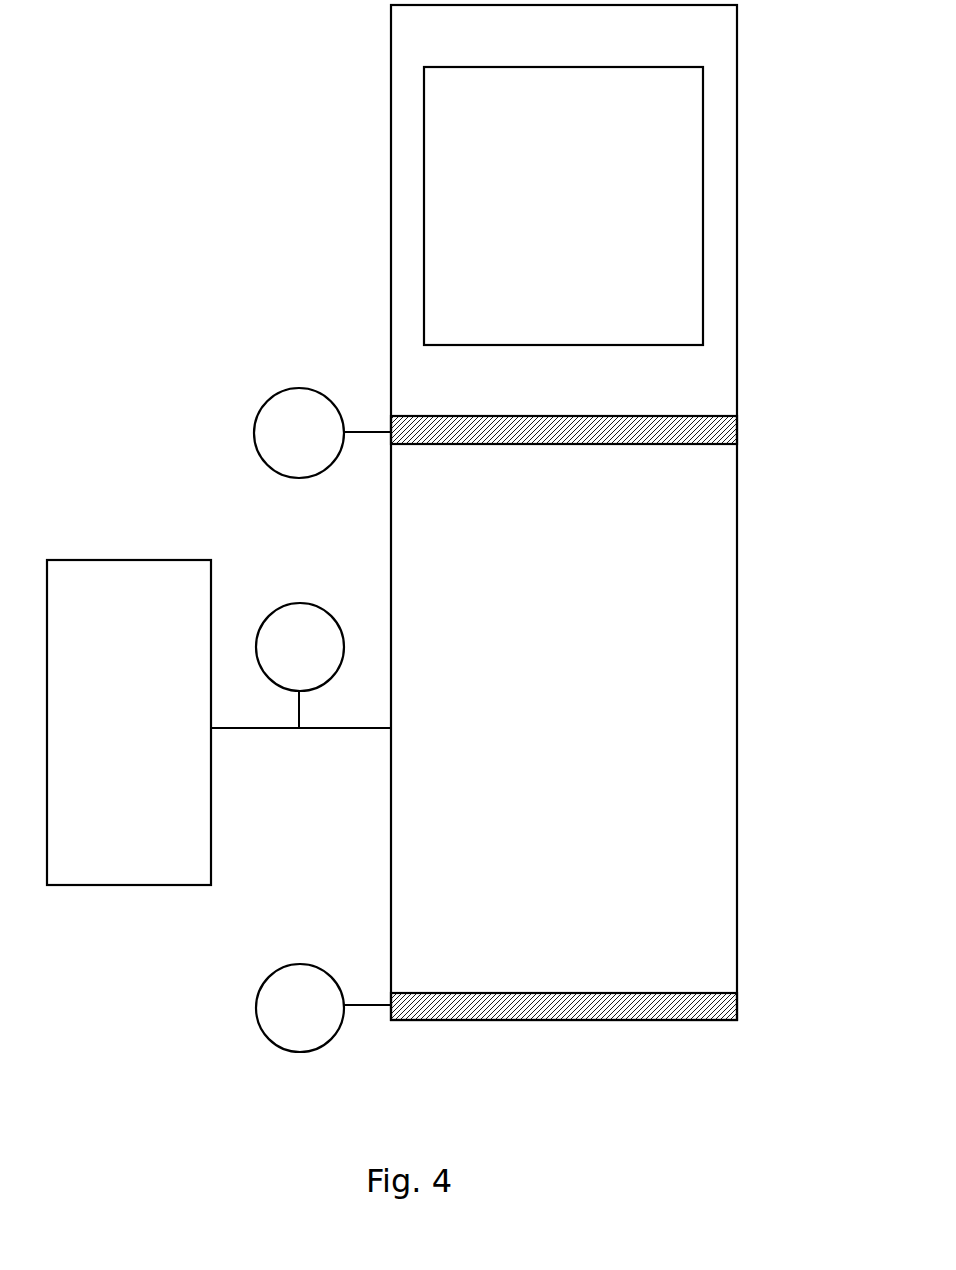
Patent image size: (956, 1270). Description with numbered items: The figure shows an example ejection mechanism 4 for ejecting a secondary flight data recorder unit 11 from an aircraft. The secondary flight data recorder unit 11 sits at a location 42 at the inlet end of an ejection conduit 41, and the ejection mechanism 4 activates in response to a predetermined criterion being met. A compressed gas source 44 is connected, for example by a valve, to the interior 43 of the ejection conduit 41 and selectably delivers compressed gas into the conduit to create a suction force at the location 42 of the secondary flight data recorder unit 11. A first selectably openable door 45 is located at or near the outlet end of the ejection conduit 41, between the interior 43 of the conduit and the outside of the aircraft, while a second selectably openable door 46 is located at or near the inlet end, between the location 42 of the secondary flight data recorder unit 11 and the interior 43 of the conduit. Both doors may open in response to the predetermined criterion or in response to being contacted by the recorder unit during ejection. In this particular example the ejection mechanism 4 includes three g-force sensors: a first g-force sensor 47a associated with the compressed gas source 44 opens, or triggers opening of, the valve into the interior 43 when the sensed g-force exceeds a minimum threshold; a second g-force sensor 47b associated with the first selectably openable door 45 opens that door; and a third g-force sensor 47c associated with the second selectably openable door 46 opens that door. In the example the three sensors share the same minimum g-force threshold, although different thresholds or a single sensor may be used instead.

The ejection mechanism 4 is at (140, 227).
The secondary flight data recorder unit 11 is at (587, 210).
The ejection conduit 41 is at (737, 747).
The location of the secondary flight data recorder 42 is at (591, 397).
The interior of the ejection conduit 43 is at (553, 735).
The compressed gas source 44 is at (147, 732).
The first selectably openable door 45 is at (720, 1003).
The second selectably openable door 46 is at (713, 429).
The first g-force sensor 47a is at (320, 660).
The second g-force sensor 47b is at (320, 1021).
The third g-force sensor 47c is at (319, 446).